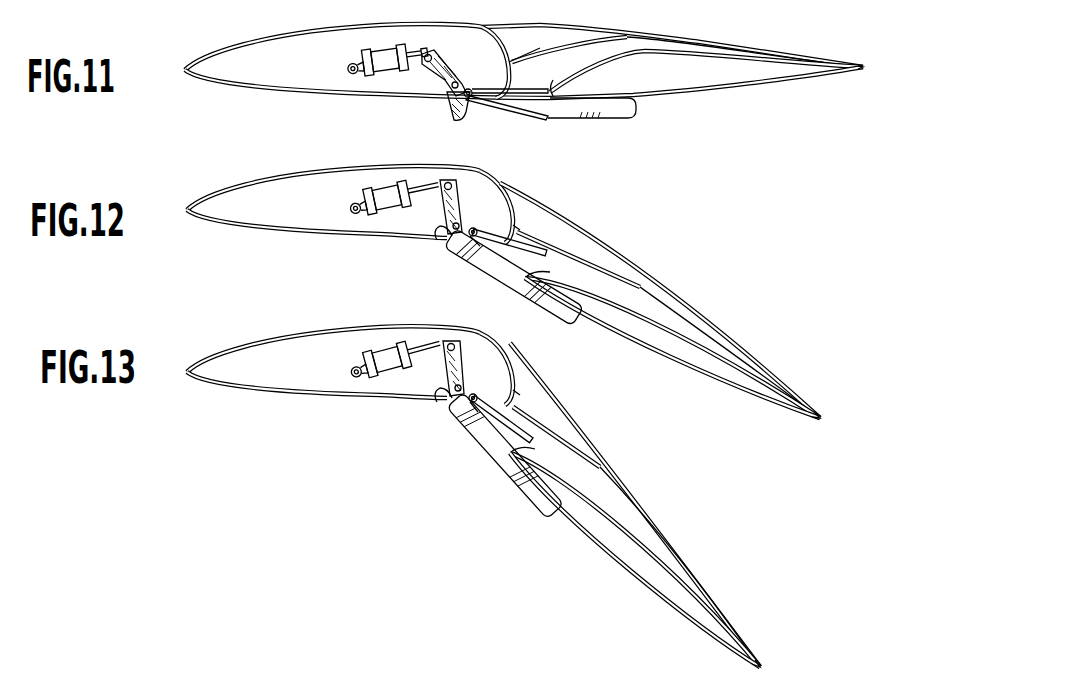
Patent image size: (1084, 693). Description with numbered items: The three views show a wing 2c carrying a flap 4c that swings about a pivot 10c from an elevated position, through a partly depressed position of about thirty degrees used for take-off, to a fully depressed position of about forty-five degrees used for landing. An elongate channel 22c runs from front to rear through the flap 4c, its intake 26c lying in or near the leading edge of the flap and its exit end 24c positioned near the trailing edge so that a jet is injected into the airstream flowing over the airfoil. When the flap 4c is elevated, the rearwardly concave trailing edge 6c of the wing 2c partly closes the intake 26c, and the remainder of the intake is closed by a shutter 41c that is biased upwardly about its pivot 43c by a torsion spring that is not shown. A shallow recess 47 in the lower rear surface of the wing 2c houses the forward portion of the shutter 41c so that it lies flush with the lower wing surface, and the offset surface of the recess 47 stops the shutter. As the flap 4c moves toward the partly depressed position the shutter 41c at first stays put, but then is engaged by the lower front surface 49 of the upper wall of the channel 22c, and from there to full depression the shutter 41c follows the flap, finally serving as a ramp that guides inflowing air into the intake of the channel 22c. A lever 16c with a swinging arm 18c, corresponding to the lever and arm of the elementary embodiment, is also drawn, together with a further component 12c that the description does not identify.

In FIG. 11, the wing 2c is at (256, 44).
In FIG. 12, the wing 2c is at (258, 180).
In FIG. 13, the wing 2c is at (247, 346).
In FIG. 11, the flap 4c is at (537, 40).
In FIG. 12, the flap 4c is at (547, 232).
In FIG. 13, the flap 4c is at (536, 392).
In FIG. 11, the trailing edge of wing 6c is at (505, 72).
In FIG. 12, the trailing edge of wing 6c is at (507, 200).
In FIG. 13, the trailing edge of wing 6c is at (510, 355).
In FIG. 11, the pivot 10c is at (450, 96).
In FIG. 12, the pivot 10c is at (441, 242).
In FIG. 13, the pivot 10c is at (441, 404).
In FIG. 11, the actuator 12c is at (381, 50).
In FIG. 12, the actuator 12c is at (382, 188).
In FIG. 13, the actuator 12c is at (382, 350).
In FIG. 11, the lever 16c is at (441, 62).
In FIG. 12, the lever 16c is at (463, 193).
In FIG. 13, the lever 16c is at (463, 350).
In FIG. 11, the arm of lever 18c is at (634, 106).
In FIG. 12, the arm of lever 18c is at (584, 330).
In FIG. 13, the arm of lever 18c is at (551, 513).
In FIG. 11, the channel 22c is at (678, 47).
In FIG. 12, the channel 22c is at (668, 305).
In FIG. 13, the channel 22c is at (666, 548).
In FIG. 11, the exit end of channel 24c is at (850, 72).
In FIG. 12, the exit end of channel 24c is at (817, 421).
In FIG. 13, the exit end of channel 24c is at (766, 668).
In FIG. 11, the intake of channel 26c is at (556, 97).
In FIG. 12, the intake of channel 26c is at (572, 260).
In FIG. 13, the intake of channel 26c is at (573, 450).
In FIG. 11, the shutter 41c is at (504, 94).
In FIG. 12, the shutter 41c is at (509, 250).
In FIG. 13, the shutter 41c is at (516, 416).
In FIG. 11, the pivot of shutter 43c is at (477, 100).
In FIG. 12, the pivot of shutter 43c is at (471, 240).
In FIG. 13, the pivot of shutter 43c is at (471, 405).
In FIG. 11, the shallow recess 47 is at (525, 86).
In FIG. 12, the shallow recess 47 is at (503, 236).
In FIG. 13, the shallow recess 47 is at (501, 396).
In FIG. 11, the lower front surface of upper wall of channel 49 is at (519, 57).
In FIG. 12, the lower front surface of upper wall of channel 49 is at (566, 246).
In FIG. 13, the lower front surface of upper wall of channel 49 is at (556, 420).